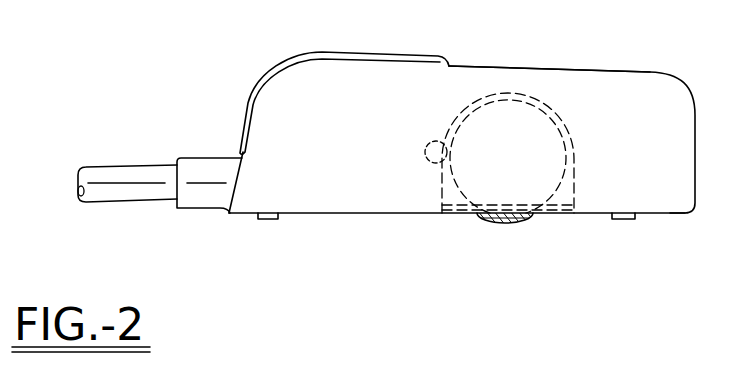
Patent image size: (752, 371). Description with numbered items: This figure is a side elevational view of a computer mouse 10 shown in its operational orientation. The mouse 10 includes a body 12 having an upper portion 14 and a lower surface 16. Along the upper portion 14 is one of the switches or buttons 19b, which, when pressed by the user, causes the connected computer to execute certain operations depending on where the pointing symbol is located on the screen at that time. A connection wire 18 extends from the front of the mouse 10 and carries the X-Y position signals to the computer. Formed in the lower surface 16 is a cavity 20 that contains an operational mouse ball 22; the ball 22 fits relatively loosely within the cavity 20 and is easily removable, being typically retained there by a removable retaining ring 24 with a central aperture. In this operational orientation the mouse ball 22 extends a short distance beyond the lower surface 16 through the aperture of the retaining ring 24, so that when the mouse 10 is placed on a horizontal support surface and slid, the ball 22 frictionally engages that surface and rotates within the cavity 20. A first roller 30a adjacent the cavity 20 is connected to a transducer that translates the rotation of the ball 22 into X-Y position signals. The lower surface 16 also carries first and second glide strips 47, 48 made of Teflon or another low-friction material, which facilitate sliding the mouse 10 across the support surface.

The computer mouse 10 is at (404, 115).
The body 12 is at (670, 72).
The upper portion 14 is at (553, 67).
The lower surface 16 is at (342, 214).
The connection wire 18 is at (99, 167).
The second switch or button 19b is at (325, 50).
The cavity 20 is at (440, 180).
The mouse ball 22 is at (507, 223).
The retaining ring 24 is at (553, 214).
The first roller 30a is at (432, 146).
The first glide strip 47 is at (260, 222).
The second glide strip 48 is at (630, 220).